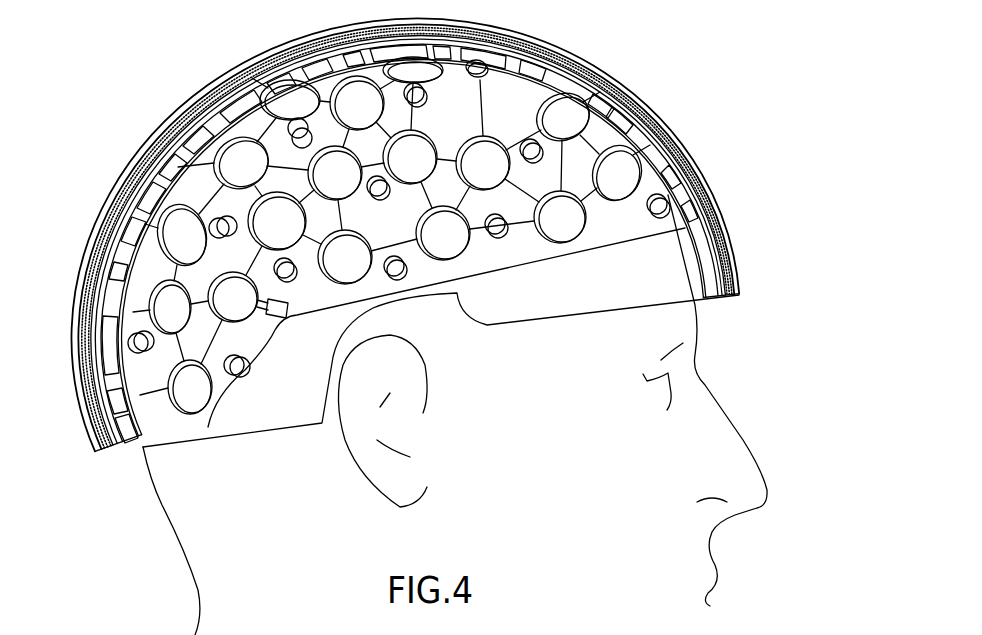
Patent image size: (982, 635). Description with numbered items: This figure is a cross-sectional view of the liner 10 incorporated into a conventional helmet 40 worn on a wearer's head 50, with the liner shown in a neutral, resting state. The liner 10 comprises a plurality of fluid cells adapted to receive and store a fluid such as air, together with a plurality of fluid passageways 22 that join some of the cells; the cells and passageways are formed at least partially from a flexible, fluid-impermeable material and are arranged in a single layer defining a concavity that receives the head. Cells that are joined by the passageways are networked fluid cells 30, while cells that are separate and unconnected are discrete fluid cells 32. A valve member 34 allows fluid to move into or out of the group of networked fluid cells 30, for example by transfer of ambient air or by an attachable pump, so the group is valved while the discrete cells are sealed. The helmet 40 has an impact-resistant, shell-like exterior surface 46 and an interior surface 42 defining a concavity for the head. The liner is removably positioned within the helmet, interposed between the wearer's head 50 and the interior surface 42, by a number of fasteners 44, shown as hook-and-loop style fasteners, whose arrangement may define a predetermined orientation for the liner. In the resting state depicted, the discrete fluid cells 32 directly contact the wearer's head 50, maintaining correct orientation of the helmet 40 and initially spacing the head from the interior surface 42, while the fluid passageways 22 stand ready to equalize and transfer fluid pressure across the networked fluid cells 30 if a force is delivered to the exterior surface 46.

The liner 10 is at (203, 428).
The fluid passageways 22 is at (396, 259).
The networked fluid cells 30 is at (614, 201).
The discrete fluid cells 32 is at (541, 60).
The valve member 34 is at (287, 318).
The helmet 40 is at (89, 467).
The interior surface 42 is at (718, 276).
The fasteners 44 is at (322, 31).
The exterior surface 46 is at (731, 236).
The wearer's head 50 is at (696, 335).